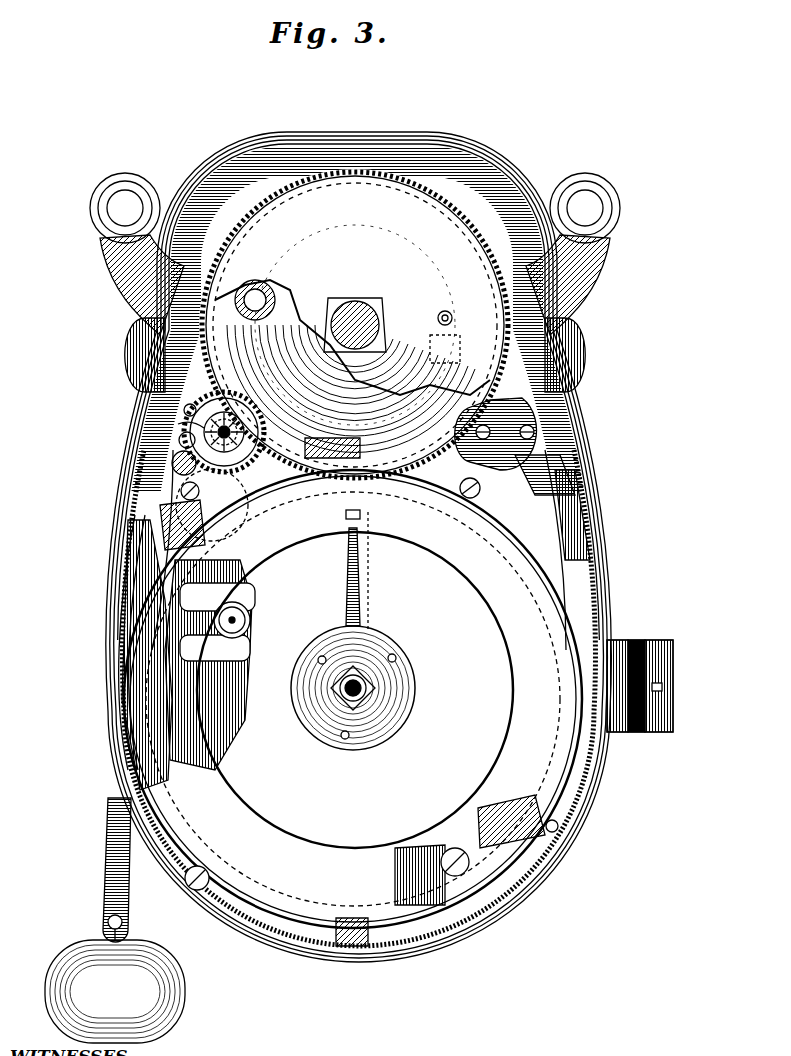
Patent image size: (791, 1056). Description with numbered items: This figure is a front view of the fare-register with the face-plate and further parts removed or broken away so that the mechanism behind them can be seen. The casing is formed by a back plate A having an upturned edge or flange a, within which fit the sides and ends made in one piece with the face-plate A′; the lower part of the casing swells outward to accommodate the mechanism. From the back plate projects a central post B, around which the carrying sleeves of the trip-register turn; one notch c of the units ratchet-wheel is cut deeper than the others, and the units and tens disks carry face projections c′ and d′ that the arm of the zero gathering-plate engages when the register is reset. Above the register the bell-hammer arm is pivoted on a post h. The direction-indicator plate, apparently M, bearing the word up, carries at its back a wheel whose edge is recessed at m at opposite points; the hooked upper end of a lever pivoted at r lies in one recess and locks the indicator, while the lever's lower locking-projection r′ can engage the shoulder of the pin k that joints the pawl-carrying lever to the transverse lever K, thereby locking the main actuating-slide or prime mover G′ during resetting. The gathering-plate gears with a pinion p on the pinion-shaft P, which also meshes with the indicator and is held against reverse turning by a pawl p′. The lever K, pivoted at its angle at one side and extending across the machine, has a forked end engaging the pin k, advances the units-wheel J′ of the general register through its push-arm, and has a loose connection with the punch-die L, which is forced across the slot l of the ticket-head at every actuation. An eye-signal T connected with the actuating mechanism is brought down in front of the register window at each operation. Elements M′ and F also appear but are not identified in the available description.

The upturned edge or flange a is at (250, 156).
The face-plate A′ is at (516, 204).
The back plate A is at (500, 188).
The hub plate M is at (382, 307).
The recess m is at (445, 337).
The post h is at (255, 300).
The mainspring M′ is at (352, 366).
The pinion-shaft P is at (250, 422).
The pinion-wheel p is at (218, 421).
The locking-projection r′ is at (176, 424).
The pawl p′ is at (178, 440).
The pivot r is at (171, 464).
The lever arm F is at (180, 525).
The eye-signal T is at (124, 585).
The pivoted lever K is at (246, 640).
The post or pin k is at (232, 620).
The notch c is at (353, 683).
The central post B is at (344, 689).
The projection c′ is at (352, 571).
The projection d′ is at (352, 510).
The punch-die L is at (640, 686).
The slot l is at (640, 732).
The main actuating-slide or prime mover G′ is at (108, 870).
The units-wheel J′ is at (420, 882).